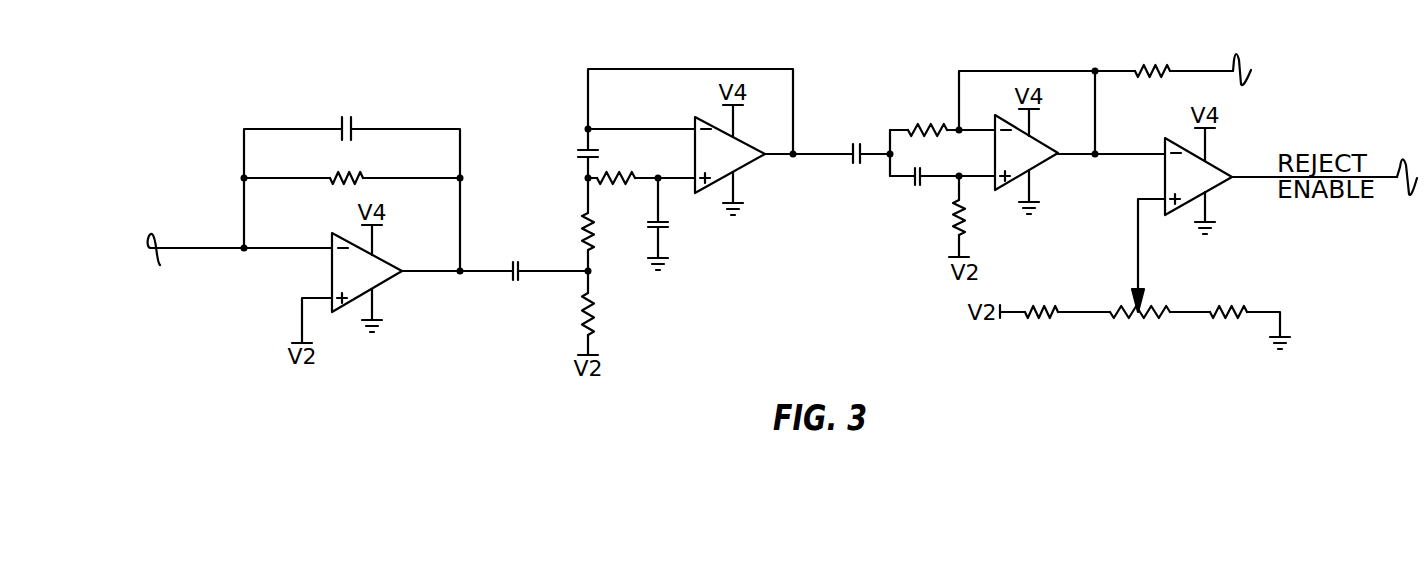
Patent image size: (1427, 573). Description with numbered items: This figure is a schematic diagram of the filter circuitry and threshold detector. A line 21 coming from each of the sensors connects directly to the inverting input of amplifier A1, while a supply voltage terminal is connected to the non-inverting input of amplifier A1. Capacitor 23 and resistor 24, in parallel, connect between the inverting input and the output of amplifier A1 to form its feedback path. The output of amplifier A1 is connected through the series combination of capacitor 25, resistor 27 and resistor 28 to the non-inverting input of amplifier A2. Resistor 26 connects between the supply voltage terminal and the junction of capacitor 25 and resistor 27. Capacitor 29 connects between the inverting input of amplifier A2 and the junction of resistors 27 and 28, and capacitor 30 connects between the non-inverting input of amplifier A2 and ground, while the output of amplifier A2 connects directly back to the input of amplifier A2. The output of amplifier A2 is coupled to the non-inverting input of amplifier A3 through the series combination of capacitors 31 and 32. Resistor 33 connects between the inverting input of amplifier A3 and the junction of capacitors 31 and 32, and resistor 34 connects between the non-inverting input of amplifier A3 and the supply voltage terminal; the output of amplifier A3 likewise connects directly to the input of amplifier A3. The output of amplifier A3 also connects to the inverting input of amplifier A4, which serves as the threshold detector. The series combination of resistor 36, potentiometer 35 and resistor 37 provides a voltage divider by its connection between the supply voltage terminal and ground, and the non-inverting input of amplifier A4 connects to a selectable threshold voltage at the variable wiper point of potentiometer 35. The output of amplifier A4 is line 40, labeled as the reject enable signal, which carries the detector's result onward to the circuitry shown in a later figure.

The line 21 is at (213, 245).
The capacitor 23 is at (342, 122).
The resistor 24 is at (345, 172).
The capacitor 25 is at (510, 278).
The resistor 26 is at (595, 313).
The resistor 27 is at (583, 233).
The resistor 28 is at (615, 175).
The capacitor 29 is at (583, 148).
The capacitor 30 is at (665, 227).
The capacitor 31 is at (850, 142).
The capacitor 32 is at (908, 180).
The resistor 33 is at (925, 122).
The resistor 34 is at (955, 220).
The potentiometer 35 is at (1132, 318).
The resistor 36 is at (1040, 305).
The resistor 37 is at (1233, 305).
The line 40 is at (1382, 177).
The amplifier A1 is at (380, 287).
The amplifier A2 is at (743, 167).
The amplifier A3 is at (1048, 162).
The amplifier A4 is at (1220, 187).